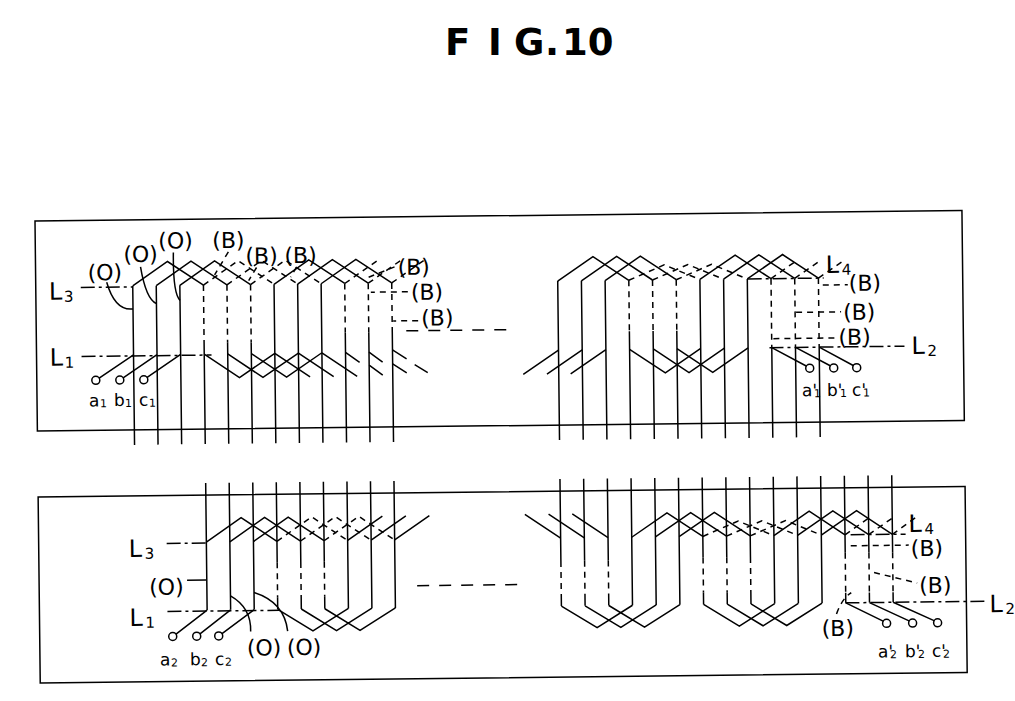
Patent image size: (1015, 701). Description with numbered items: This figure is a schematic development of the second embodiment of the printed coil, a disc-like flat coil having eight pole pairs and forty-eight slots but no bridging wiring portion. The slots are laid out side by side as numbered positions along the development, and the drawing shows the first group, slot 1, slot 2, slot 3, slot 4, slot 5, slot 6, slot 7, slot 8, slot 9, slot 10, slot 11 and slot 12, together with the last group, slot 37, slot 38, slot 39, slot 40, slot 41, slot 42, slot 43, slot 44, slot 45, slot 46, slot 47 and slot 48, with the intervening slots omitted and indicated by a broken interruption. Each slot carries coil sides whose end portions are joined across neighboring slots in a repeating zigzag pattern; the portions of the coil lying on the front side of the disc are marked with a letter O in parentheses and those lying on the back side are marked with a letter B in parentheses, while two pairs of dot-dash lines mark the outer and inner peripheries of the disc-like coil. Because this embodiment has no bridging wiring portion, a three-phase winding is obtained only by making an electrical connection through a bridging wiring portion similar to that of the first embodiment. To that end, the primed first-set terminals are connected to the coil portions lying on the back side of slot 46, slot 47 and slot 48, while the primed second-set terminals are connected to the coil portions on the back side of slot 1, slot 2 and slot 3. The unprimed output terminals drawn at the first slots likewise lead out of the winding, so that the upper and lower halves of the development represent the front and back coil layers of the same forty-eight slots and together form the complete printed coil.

The slot 1 is at (489, 444).
The slot 2 is at (513, 443).
The slot 3 is at (536, 443).
The slot 4 is at (205, 447).
The slot 5 is at (228, 447).
The slot 6 is at (252, 446).
The slot 7 is at (275, 446).
The slot 8 is at (299, 446).
The slot 9 is at (322, 446).
The slot 10 is at (346, 445).
The slot 11 is at (370, 445).
The slot 12 is at (393, 445).
The slot 37 is at (559, 443).
The slot 38 is at (583, 443).
The slot 39 is at (607, 442).
The slot 40 is at (631, 442).
The slot 41 is at (654, 442).
The slot 42 is at (678, 442).
The slot 43 is at (702, 441).
The slot 44 is at (725, 441).
The slot 45 is at (749, 441).
The slot 46 is at (773, 440).
The slot 47 is at (796, 440).
The slot 48 is at (820, 440).